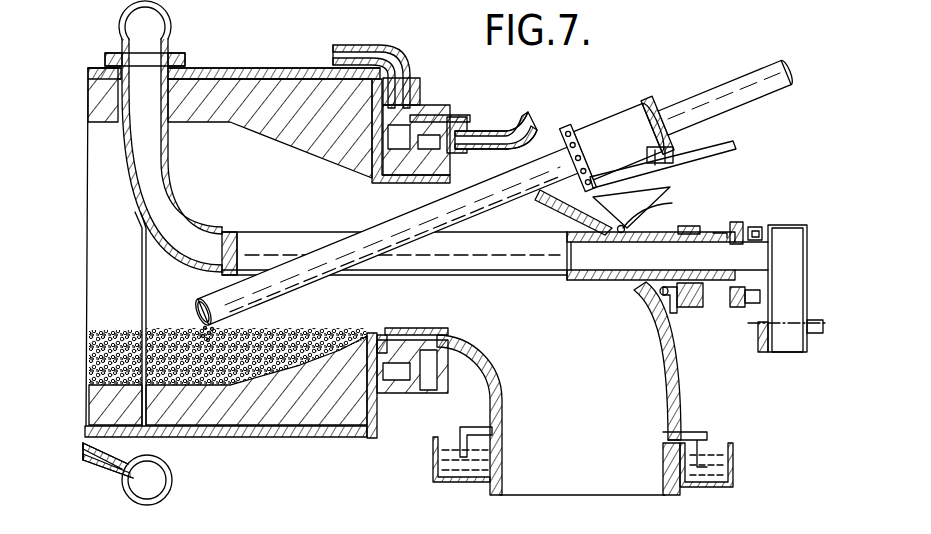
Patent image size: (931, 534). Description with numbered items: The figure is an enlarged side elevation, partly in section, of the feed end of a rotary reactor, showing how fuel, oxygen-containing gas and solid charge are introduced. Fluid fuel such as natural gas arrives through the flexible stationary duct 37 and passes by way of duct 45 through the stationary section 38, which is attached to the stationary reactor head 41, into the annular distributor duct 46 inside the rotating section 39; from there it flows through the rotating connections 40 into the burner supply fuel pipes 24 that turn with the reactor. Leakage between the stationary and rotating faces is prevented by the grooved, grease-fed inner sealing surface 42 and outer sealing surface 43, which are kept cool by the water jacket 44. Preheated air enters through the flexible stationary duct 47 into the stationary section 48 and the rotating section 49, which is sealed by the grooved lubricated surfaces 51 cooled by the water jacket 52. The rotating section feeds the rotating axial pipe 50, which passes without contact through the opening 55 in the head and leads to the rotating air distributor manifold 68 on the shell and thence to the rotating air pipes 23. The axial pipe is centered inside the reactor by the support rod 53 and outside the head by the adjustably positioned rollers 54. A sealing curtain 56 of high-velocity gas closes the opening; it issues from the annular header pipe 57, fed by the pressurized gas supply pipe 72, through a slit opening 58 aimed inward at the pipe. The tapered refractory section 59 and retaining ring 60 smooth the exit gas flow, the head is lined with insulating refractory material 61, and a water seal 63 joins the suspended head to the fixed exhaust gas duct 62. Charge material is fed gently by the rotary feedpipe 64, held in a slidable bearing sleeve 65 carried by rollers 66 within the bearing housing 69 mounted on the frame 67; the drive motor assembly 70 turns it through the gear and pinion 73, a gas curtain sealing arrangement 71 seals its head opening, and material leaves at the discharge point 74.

The rotating air pipes 23 is at (103, 460).
The burner supply fuel pipes 24 is at (334, 47).
The flexible stationary duct 37 is at (511, 120).
The stationary section 38 is at (433, 160).
The rotating section 39 is at (375, 122).
The rotating connections 40 is at (402, 50).
The stationary reactor head 41 is at (670, 338).
The inner sealing surface 42 is at (390, 330).
The outer sealing surface 43 is at (403, 394).
The water jacket 44 is at (433, 128).
The duct 45 is at (452, 140).
The annular distributor duct 46 is at (390, 167).
The flexible stationary duct 47 is at (760, 337).
The stationary section 48 is at (786, 240).
The rotating section 49 is at (736, 240).
The rotating axial pipe 50 is at (232, 240).
The grooved lubricated surfaces 51 is at (755, 292).
The water jacket 52 is at (755, 227).
The support rod 53 is at (142, 282).
The adjustably positioned rollers 54 is at (682, 236).
The opening 55 is at (667, 256).
The sealing curtain 56 is at (637, 287).
The annular header pipe 57 is at (692, 299).
The slit opening 58 is at (660, 297).
The tapered refractory section 59 is at (228, 125).
The retaining ring 60 is at (405, 150).
The insulating refractory material 61 is at (500, 378).
The fixed exhaust gas duct 62 is at (499, 478).
The water seal 63 is at (713, 467).
The rotary feedpipe 64 is at (337, 262).
The bearing sleeve 65 is at (690, 90).
The rollers 66 is at (571, 125).
The frame 67 is at (720, 153).
The rotating air distributor manifold 68 is at (152, 47).
The bearing housing 69 is at (621, 115).
The drive motor assembly 70 is at (623, 158).
The gas curtain sealing arrangement 71 is at (561, 203).
The pressurized gas supply pipe 72 is at (634, 257).
The gear and pinion 73 is at (715, 148).
The discharge point 74 is at (203, 310).